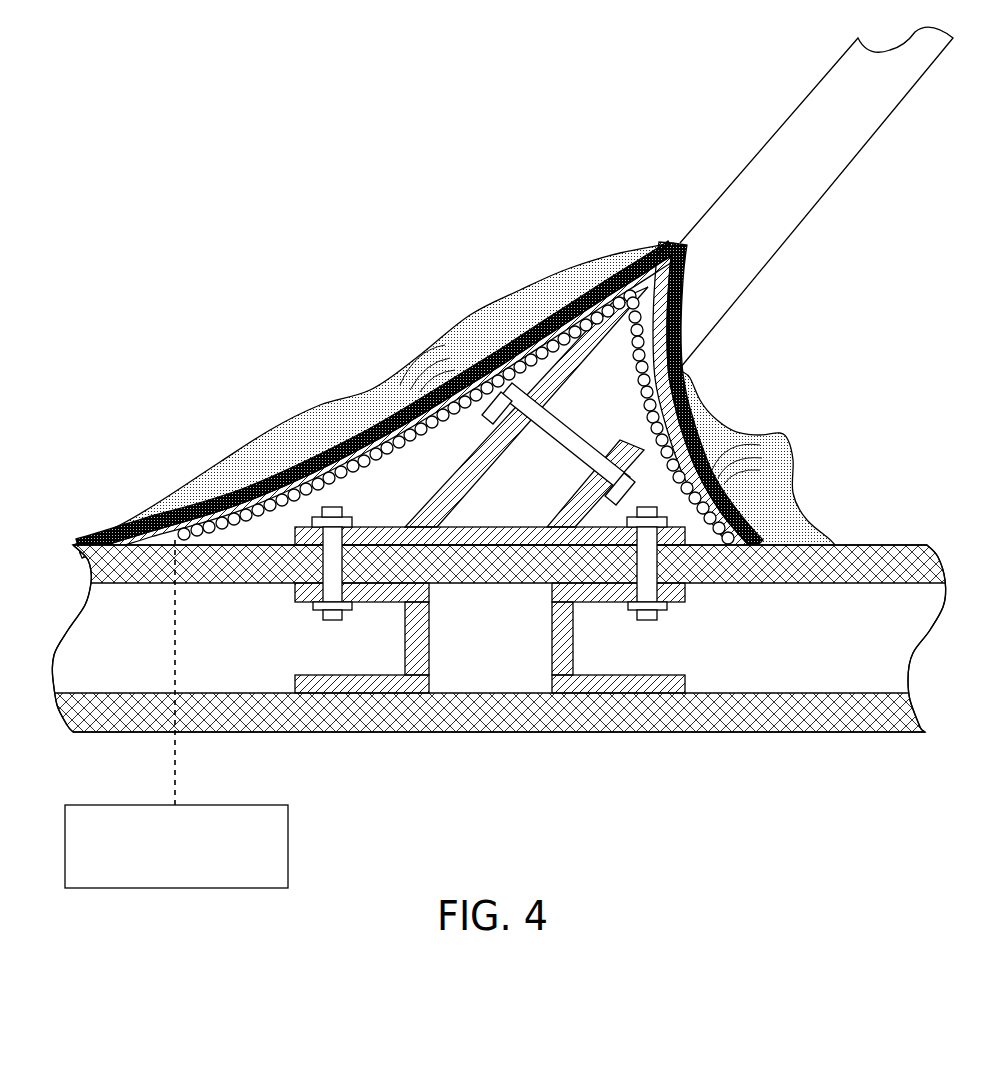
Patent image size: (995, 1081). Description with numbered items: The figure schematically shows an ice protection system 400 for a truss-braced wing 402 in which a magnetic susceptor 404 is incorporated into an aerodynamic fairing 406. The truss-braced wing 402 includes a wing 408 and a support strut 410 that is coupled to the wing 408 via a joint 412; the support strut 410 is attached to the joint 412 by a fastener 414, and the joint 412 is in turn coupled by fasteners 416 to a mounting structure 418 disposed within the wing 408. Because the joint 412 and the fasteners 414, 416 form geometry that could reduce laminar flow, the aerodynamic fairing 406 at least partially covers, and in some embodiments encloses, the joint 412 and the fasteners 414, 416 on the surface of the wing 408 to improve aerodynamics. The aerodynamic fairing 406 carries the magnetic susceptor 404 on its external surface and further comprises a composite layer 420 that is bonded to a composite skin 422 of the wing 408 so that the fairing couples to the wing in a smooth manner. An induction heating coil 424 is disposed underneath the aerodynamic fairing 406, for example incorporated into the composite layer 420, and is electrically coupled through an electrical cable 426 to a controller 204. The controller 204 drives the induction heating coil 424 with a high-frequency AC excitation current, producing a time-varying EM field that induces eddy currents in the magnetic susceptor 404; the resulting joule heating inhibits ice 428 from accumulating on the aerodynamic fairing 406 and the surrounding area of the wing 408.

The ice protection system 400 is at (278, 287).
The truss-braced wing 402 is at (505, 656).
The magnetic susceptor 404 is at (377, 399).
The aerodynamic fairing 406 is at (668, 318).
The wing 408 is at (220, 732).
The support strut 410 is at (727, 190).
The joint 412 is at (435, 496).
The fastener 414 is at (547, 447).
The fasteners 416 is at (322, 619).
The mounting structure 418 is at (405, 673).
The composite layer 420 is at (345, 442).
The composite skin 422 is at (860, 545).
The induction heating coil 424 is at (272, 475).
The electrical cable 426 is at (175, 637).
The ice 428 is at (505, 297).
The controller 204 is at (263, 859).